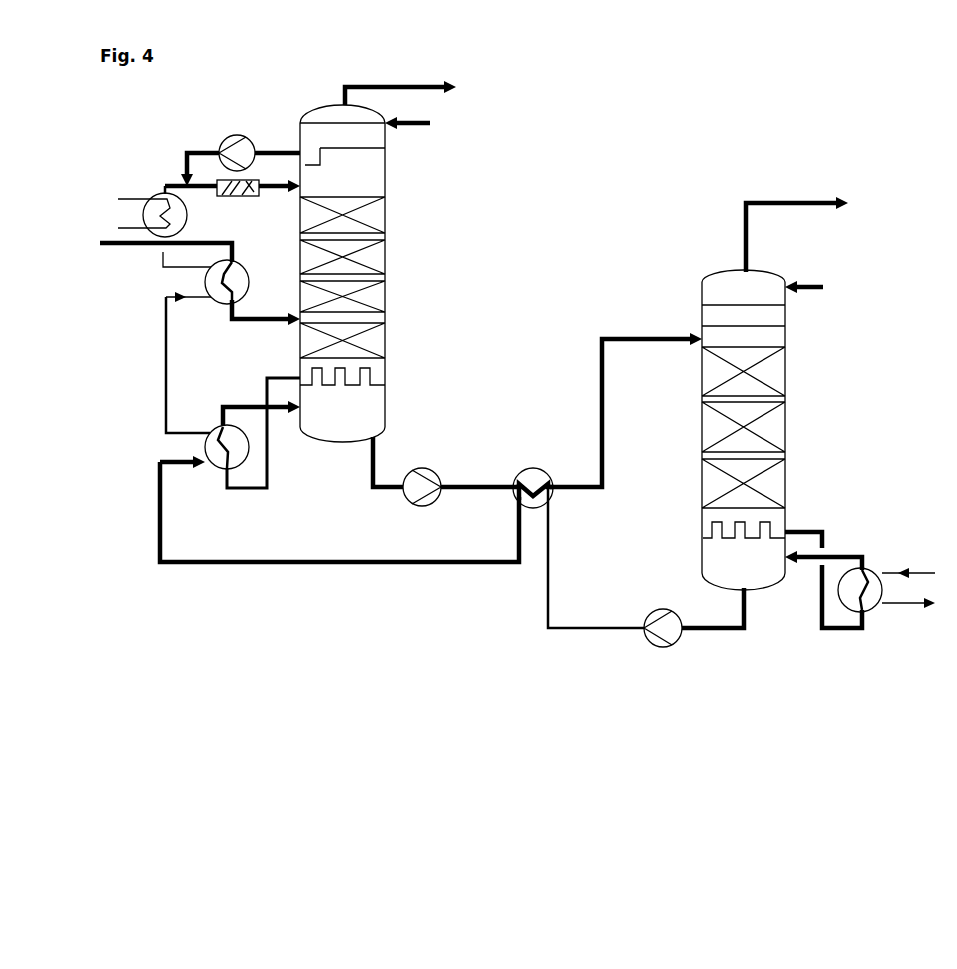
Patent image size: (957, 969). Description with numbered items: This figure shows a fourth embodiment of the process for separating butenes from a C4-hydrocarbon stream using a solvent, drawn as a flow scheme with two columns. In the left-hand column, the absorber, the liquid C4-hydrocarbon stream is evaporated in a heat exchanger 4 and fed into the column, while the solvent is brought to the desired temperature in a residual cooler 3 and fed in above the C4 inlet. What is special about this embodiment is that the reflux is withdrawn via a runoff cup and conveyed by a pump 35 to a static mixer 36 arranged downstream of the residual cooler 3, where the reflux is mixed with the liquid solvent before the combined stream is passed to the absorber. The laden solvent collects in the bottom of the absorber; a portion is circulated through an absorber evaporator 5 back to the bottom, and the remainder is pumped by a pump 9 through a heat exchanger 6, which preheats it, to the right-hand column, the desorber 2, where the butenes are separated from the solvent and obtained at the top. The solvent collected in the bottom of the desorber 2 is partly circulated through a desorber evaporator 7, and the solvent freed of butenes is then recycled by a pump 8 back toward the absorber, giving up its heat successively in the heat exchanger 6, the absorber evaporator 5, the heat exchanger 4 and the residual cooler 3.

The desorber 2 is at (765, 412).
The residual cooler 3 is at (152, 211).
The heat exchanger 4 is at (231, 288).
The absorber evaporator 5 is at (230, 392).
The heat exchanger 6 is at (578, 538).
The desorber evaporator 7 is at (860, 579).
The pump 8 is at (663, 618).
The pump 9 is at (458, 502).
The pump 35 is at (240, 148).
The static mixer 36 is at (232, 200).